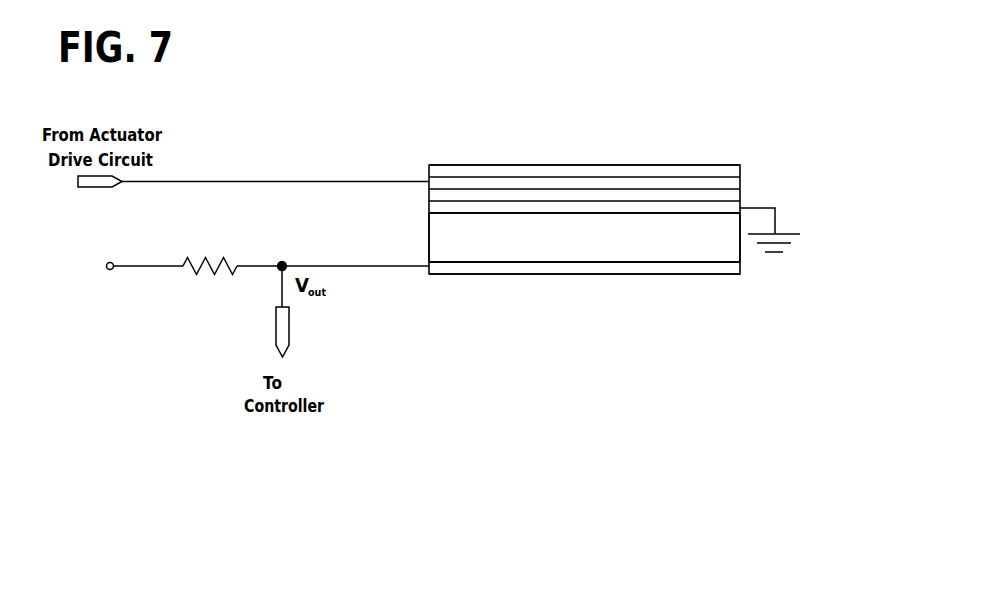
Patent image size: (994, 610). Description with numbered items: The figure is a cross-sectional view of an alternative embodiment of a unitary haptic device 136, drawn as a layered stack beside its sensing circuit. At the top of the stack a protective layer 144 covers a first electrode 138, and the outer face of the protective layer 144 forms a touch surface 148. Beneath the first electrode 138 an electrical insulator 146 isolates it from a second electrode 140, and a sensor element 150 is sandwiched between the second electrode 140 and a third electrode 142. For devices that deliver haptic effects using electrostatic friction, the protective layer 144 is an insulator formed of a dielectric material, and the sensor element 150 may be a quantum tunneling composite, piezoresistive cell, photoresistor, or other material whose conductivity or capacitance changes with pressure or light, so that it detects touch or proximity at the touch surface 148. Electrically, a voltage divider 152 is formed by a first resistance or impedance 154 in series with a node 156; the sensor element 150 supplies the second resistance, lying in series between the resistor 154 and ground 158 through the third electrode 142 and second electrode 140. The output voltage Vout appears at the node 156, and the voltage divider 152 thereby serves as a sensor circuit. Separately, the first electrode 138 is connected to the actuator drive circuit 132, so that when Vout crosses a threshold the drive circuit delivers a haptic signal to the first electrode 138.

The actuator drive circuit 132 is at (105, 187).
The unitary haptic device 136 is at (603, 105).
The first electrode 138 is at (740, 180).
The second electrode 140 is at (740, 202).
The third electrode 142 is at (740, 273).
The protective layer 144 is at (740, 166).
The electrical insulator 146 is at (740, 190).
The touch surface 148 is at (455, 166).
The sensor element 150 is at (428, 230).
The voltage divider 152 is at (135, 266).
The first resistance or impedance 154 is at (215, 248).
The node 156 is at (287, 258).
The ground 158 is at (775, 227).